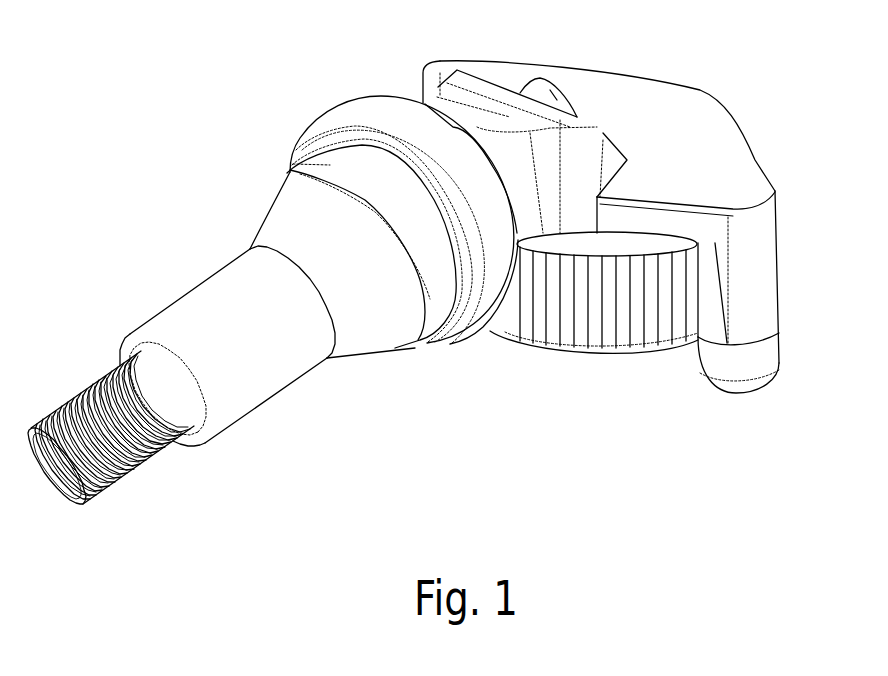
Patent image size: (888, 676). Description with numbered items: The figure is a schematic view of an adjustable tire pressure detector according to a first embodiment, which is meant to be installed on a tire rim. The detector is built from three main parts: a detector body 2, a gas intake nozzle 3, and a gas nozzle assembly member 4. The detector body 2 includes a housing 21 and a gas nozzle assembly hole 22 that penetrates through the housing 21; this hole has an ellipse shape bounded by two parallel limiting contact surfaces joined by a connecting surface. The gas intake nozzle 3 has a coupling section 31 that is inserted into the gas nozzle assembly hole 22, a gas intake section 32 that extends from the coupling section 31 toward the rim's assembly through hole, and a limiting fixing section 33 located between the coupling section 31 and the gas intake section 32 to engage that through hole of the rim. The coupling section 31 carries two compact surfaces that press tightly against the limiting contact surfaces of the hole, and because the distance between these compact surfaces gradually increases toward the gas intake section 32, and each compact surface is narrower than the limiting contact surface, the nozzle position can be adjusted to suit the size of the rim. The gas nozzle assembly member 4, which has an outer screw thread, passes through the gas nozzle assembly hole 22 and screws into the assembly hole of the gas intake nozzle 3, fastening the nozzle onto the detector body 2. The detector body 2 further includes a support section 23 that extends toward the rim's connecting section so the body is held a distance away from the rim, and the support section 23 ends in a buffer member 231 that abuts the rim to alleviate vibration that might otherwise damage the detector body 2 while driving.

The detector body 2 is at (763, 157).
The housing 21 is at (677, 103).
The gas nozzle assembly hole 22 is at (477, 127).
The support section 23 is at (757, 273).
The buffer member 231 is at (717, 380).
The gas intake nozzle 3 is at (323, 40).
The coupling section 31 is at (350, 117).
The gas intake section 32 is at (217, 300).
The limiting fixing section 33 is at (310, 157).
The gas nozzle assembly member 4 is at (547, 97).